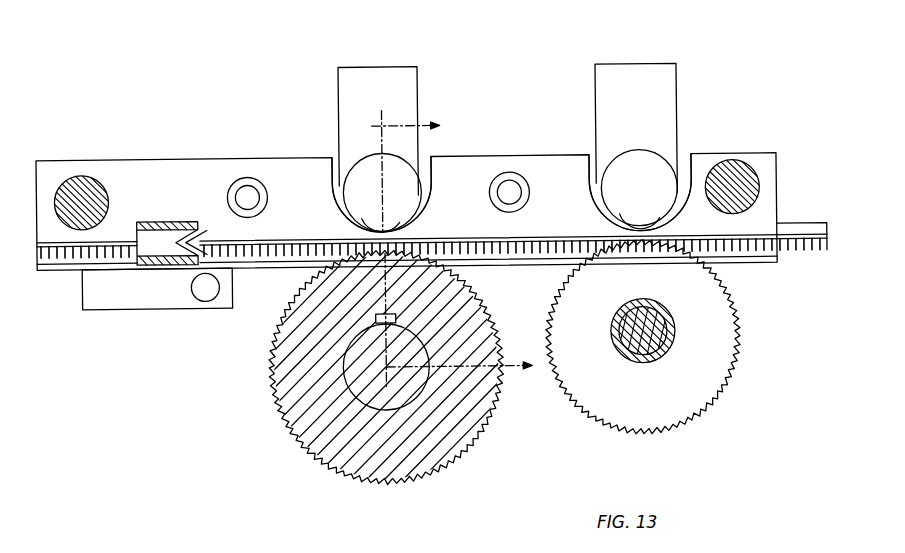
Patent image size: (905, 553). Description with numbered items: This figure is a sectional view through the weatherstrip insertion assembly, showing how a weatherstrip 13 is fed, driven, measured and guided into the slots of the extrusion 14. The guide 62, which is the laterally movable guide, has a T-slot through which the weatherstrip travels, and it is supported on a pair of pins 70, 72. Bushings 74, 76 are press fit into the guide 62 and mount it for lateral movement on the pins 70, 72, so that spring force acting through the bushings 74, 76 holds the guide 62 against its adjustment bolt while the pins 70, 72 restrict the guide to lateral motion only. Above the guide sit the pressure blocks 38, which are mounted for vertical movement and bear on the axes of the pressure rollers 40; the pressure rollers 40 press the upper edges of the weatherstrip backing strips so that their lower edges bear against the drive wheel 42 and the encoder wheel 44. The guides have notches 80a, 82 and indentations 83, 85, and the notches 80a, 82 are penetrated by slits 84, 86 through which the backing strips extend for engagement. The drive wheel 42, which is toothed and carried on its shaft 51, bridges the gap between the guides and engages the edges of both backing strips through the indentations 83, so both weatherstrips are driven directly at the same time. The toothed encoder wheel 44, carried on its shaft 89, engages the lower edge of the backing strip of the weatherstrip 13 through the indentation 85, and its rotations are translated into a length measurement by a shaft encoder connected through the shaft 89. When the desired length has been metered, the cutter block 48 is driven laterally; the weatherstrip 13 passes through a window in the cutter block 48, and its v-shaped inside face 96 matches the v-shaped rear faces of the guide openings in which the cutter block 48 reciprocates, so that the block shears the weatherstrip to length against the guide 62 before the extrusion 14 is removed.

The weatherstrip 13 is at (813, 227).
The extrusion 14 is at (452, 248).
The pressure blocks 38 is at (412, 83).
The pressure rollers 40 is at (361, 168).
The drive wheel 42 is at (323, 446).
The encoder wheel 44 is at (600, 401).
The cutter block 48 is at (172, 219).
The shaft 51 is at (352, 353).
The guide 62 is at (487, 164).
The pin 70 is at (78, 172).
The pin 72 is at (738, 165).
The bushing 74 is at (75, 173).
The bushing 76 is at (760, 182).
The notch 80a is at (427, 217).
The notch 82 is at (677, 217).
The indentation 83 is at (450, 258).
The slit 84 is at (377, 220).
The indentation 85 is at (703, 266).
The slit 86 is at (626, 225).
The shaft 89 is at (672, 332).
The inside face 96 is at (187, 233).